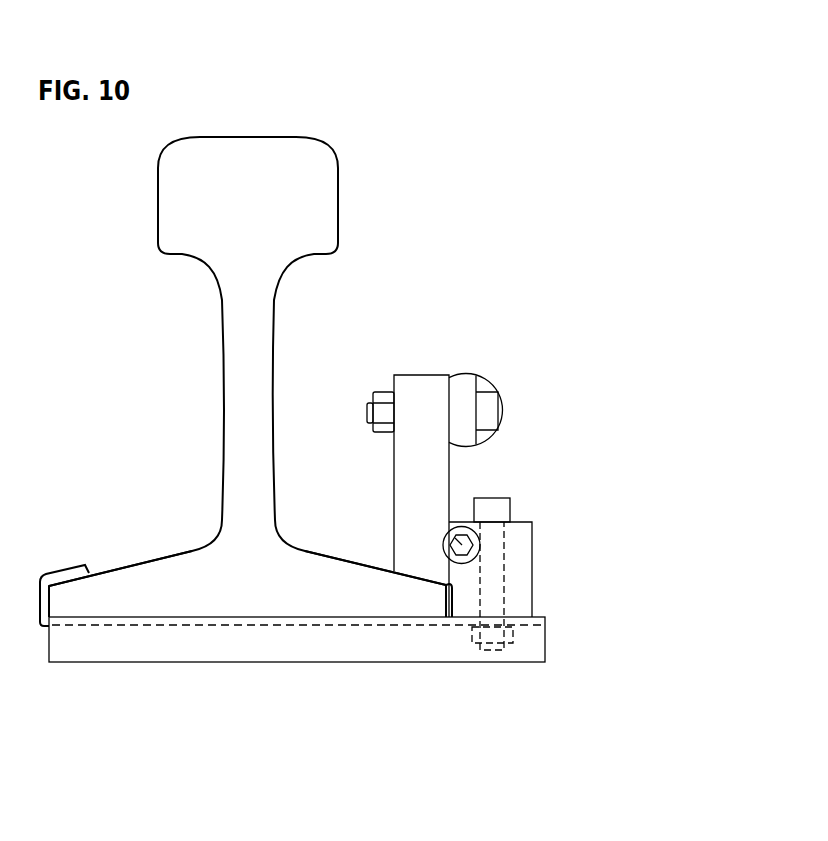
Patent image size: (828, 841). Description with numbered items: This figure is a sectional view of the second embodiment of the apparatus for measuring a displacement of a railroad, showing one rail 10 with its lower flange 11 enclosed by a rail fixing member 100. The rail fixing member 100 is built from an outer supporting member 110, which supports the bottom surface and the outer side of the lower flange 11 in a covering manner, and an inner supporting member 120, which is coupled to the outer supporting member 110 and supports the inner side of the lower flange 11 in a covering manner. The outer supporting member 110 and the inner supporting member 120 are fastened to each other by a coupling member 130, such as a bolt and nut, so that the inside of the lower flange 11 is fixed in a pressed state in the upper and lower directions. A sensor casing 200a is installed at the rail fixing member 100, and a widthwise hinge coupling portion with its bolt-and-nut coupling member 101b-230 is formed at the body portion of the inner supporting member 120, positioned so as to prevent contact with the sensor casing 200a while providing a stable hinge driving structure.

The rail 10 is at (184, 329).
The lower flange 11 is at (137, 585).
The rail fixing member 100 is at (387, 555).
The outer supporting member 110 is at (430, 638).
The inner supporting member 120 is at (513, 565).
The coupling member 130 is at (492, 508).
The sensor casing 200a is at (487, 383).
The widthwise hinge coupling portion and coupling member 101b-230 is at (449, 535).